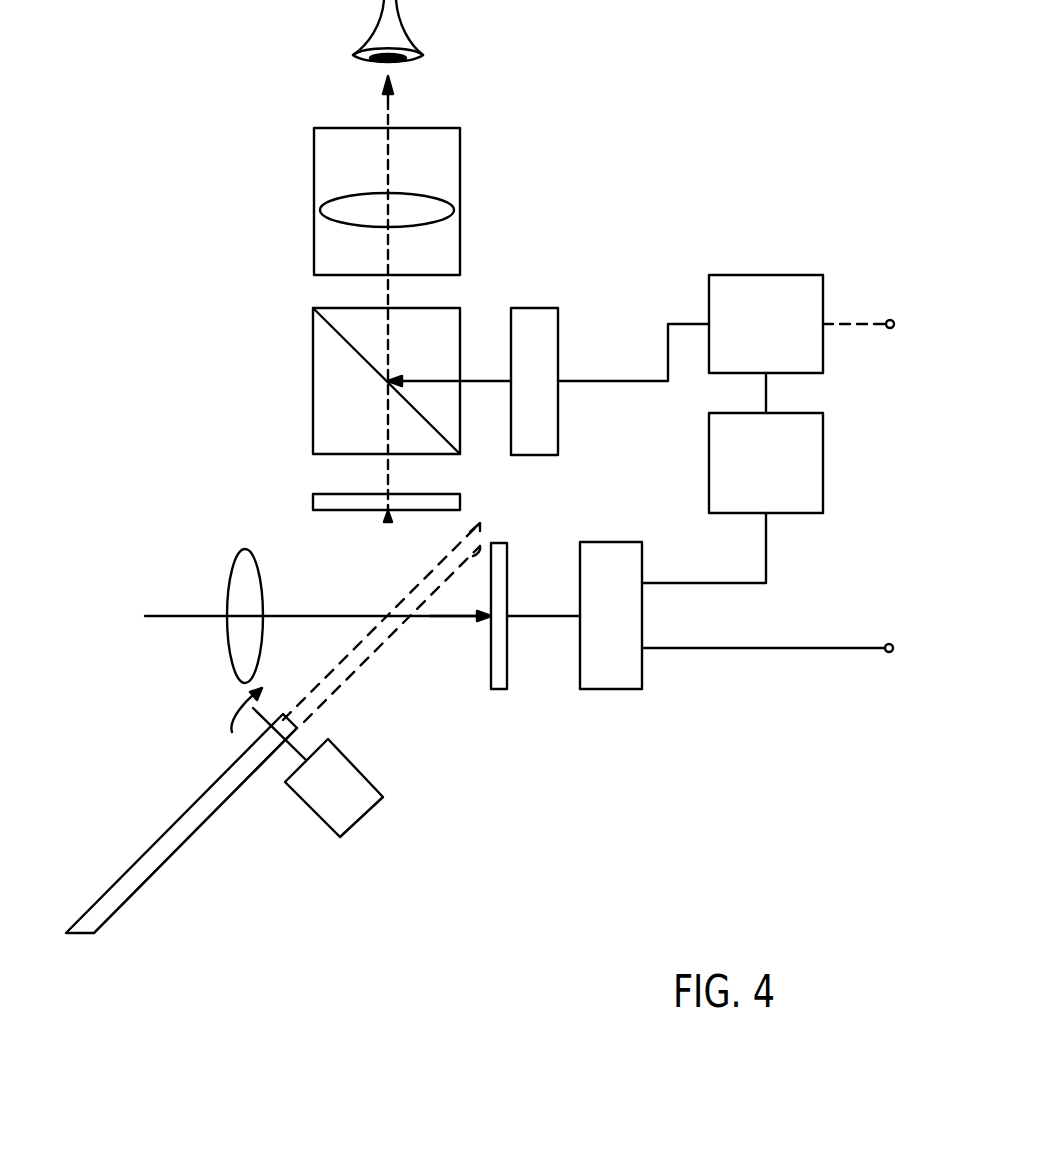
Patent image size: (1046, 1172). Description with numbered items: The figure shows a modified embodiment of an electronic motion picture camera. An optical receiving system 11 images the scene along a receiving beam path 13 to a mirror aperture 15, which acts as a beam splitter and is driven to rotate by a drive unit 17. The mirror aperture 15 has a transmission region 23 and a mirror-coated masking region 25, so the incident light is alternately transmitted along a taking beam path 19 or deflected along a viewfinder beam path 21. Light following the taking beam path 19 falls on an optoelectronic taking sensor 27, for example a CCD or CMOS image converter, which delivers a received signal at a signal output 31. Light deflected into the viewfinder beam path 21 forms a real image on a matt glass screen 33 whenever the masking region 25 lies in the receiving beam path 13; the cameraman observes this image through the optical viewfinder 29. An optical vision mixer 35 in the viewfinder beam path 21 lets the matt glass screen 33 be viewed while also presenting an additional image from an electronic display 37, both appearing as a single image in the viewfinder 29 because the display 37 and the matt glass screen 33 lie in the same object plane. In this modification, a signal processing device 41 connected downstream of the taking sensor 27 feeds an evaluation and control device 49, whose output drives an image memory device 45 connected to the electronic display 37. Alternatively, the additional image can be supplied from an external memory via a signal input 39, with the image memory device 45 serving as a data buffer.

The optical receiving system 11 is at (230, 582).
The receiving beam path 13 is at (320, 614).
The mirror aperture 15 is at (156, 890).
The drive unit 17 is at (330, 830).
The taking beam path 19 is at (433, 622).
The viewfinder beam path 21 is at (388, 292).
The transmission region 23 is at (355, 672).
The masking region 25 is at (208, 812).
The taking sensor 27 is at (507, 678).
The viewfinder 29 is at (460, 158).
The signal output 31 is at (889, 653).
The matt glass screen 33 is at (313, 502).
The optical vision mixer 35 is at (313, 373).
The electronic display 37 is at (558, 320).
The signal input 39 is at (890, 319).
The signal processing device 41 is at (610, 542).
The image memory device 45 is at (773, 275).
The evaluation and control device 49 is at (823, 463).